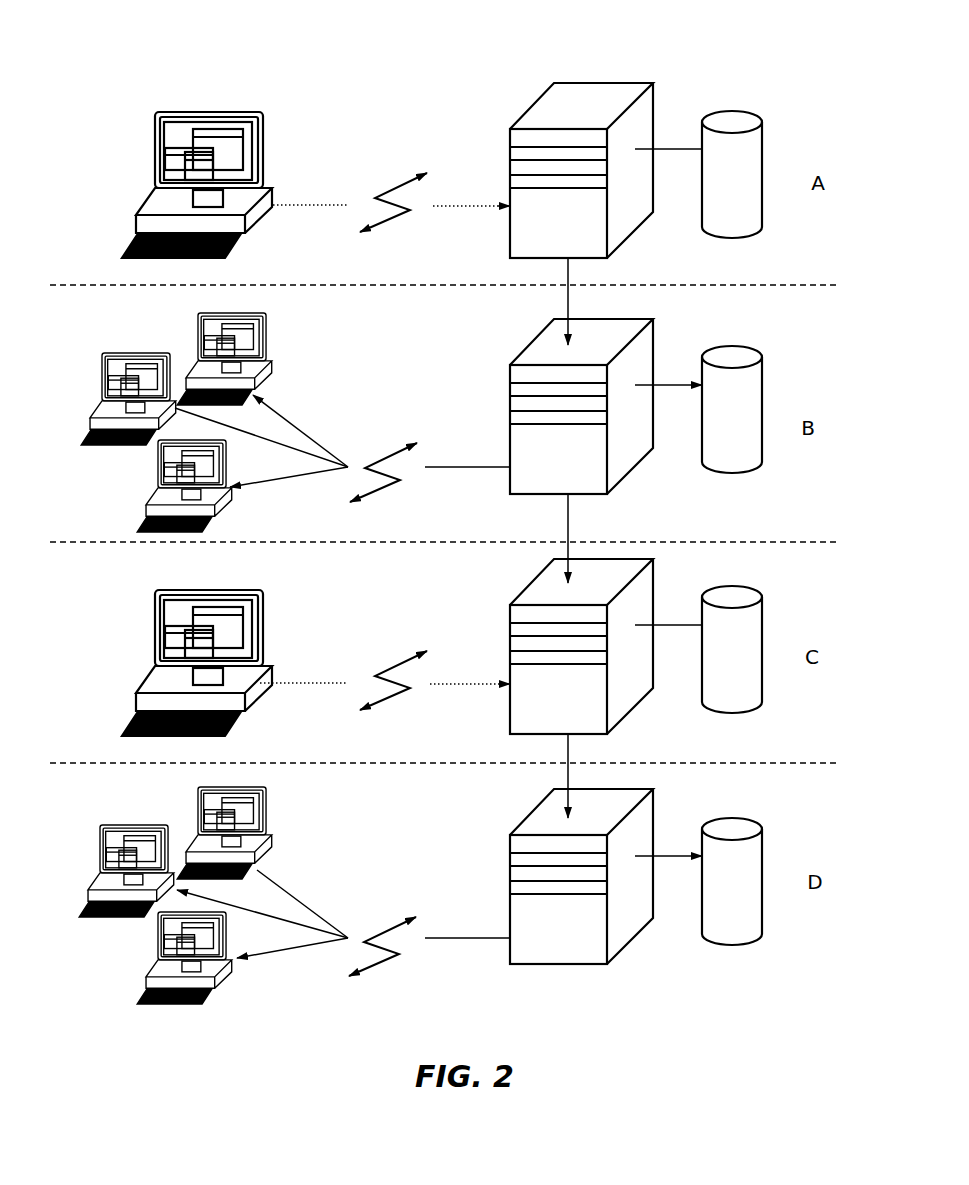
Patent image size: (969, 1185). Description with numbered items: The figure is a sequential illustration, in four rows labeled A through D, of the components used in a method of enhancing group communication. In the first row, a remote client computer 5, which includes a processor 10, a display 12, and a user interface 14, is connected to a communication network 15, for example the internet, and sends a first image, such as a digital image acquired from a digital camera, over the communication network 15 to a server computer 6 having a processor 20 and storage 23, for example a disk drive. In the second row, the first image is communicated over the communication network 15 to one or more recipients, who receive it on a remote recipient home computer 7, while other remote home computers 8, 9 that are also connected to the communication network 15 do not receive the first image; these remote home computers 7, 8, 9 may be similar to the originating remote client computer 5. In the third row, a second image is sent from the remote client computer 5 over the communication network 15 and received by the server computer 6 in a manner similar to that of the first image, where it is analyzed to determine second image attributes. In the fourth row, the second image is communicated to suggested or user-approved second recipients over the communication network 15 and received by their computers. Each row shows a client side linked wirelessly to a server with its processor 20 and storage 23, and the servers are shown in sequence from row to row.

The remote client computer 5 is at (192, 92).
The server computer 6 is at (525, 75).
The remote recipient home computer 7 is at (188, 325).
The remote home computer 8 is at (97, 397).
The remote home computer 9 is at (148, 483).
The processor 10 is at (167, 220).
The display 12 is at (171, 139).
The user interface 14 is at (164, 150).
The communication network 15 is at (392, 182).
The processor 20 is at (657, 95).
The storage 23 is at (738, 122).